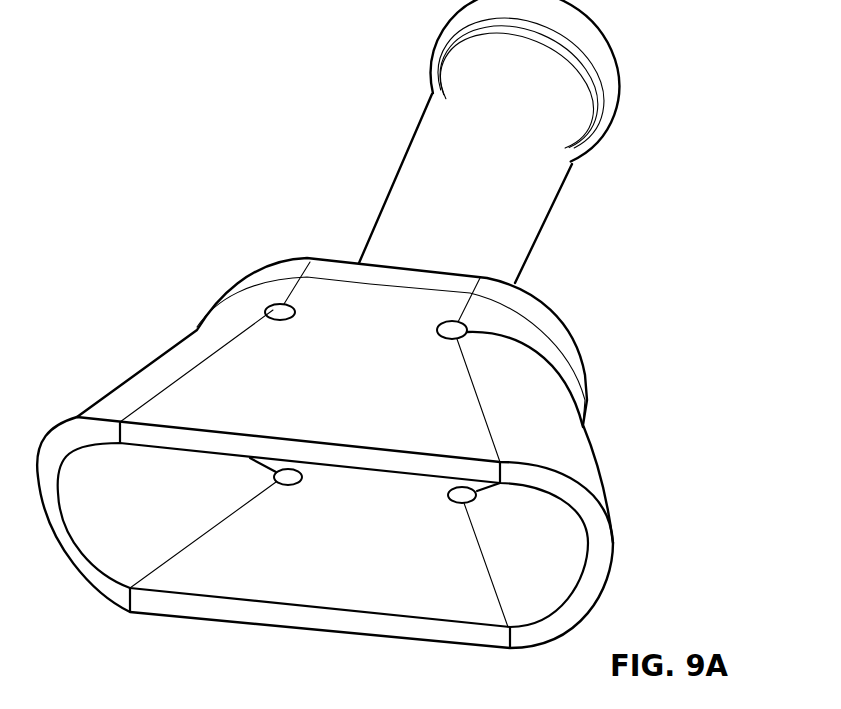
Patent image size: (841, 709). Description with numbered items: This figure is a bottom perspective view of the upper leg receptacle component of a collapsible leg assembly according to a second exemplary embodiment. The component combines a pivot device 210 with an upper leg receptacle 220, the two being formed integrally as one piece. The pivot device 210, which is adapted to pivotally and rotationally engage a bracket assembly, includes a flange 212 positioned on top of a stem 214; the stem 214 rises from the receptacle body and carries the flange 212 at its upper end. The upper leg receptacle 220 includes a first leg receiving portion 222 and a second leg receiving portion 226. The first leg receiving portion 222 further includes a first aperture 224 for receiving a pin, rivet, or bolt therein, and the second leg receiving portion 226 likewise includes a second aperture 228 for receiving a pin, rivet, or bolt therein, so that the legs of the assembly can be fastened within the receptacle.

The pivot device 210 is at (627, 347).
The flange 212 is at (610, 63).
The stem 214 is at (545, 192).
The upper leg receptacle 220 is at (143, 175).
The first leg receiving portion 222 is at (143, 360).
The first aperture 224 is at (273, 303).
The second leg receiving portion 226 is at (610, 555).
The second aperture 228 is at (466, 326).